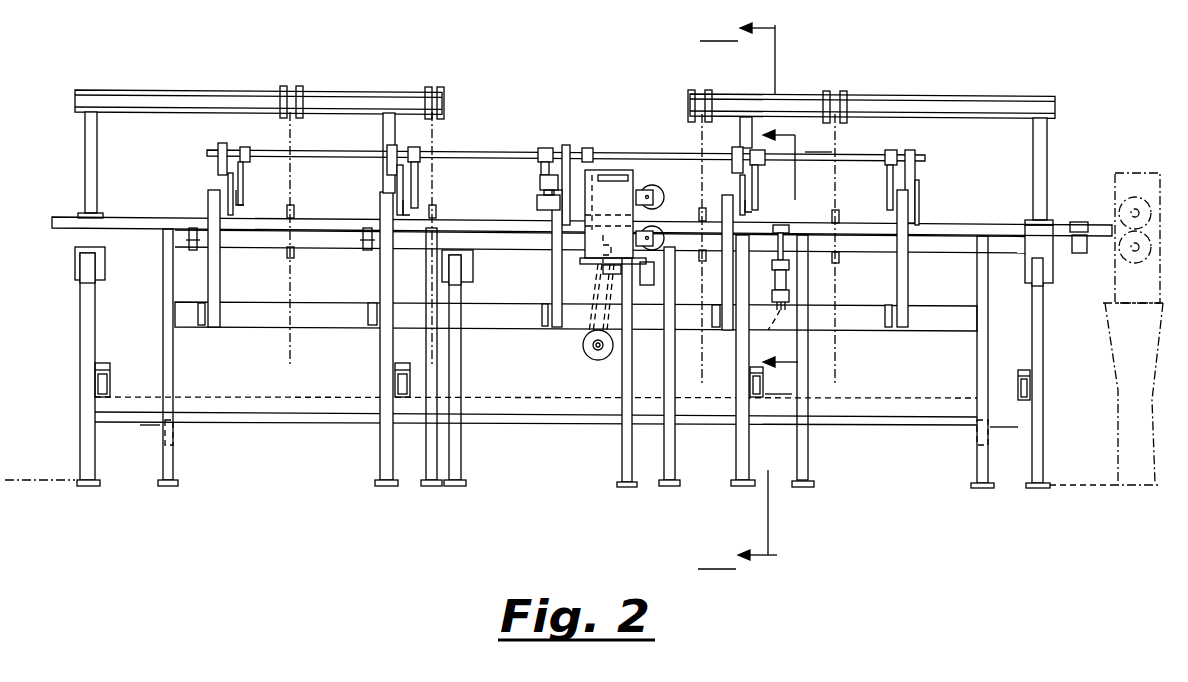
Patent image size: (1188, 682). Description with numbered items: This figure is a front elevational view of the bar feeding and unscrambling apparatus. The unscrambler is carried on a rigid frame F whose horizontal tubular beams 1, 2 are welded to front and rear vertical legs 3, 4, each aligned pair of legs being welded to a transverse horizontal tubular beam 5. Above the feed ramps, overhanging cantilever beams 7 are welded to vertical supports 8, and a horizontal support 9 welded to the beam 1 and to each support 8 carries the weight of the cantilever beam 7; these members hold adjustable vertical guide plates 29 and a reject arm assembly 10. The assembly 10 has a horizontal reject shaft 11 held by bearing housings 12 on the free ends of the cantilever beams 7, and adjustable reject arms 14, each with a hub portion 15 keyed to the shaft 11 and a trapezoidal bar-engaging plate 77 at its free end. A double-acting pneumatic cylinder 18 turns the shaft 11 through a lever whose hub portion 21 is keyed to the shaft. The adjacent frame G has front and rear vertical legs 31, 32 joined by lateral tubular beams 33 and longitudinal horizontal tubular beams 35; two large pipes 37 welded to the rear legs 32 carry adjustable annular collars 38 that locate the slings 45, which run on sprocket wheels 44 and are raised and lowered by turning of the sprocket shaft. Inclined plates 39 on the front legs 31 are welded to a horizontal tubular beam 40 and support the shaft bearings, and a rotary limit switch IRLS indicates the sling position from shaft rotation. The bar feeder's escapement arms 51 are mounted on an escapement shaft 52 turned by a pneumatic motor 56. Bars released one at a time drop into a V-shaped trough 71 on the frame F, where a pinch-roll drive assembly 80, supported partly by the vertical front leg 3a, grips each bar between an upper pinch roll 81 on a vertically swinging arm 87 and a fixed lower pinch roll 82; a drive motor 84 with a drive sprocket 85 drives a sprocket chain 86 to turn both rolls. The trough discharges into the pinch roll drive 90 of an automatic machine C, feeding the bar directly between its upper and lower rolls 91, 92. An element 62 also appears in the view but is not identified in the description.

The horizontal tubular beam 1 is at (330, 310).
The horizontal tubular beam 2 is at (335, 405).
The front vertical leg 3 is at (163, 348).
The vertical front leg 3a is at (622, 448).
The rear vertical leg 4 is at (797, 260).
The transverse horizontal tubular beam 5 is at (178, 448).
The cantilever beam 7 is at (208, 200).
The vertical support 8 is at (552, 268).
The horizontal support 9 is at (202, 326).
The reject arm assembly 10 is at (920, 148).
The horizontal reject shaft 11 is at (485, 152).
The bearing housing 12 is at (220, 143).
The adjustable reject arm 14 is at (418, 180).
The hub portion 15 is at (245, 147).
The double-acting pneumatic cylinder 18 is at (540, 183).
The hub portion 21 is at (543, 148).
The adjustable vertical guide plate 29 is at (233, 185).
The front vertical leg 31 is at (80, 447).
The rear vertical leg 32 is at (85, 135).
The lateral tubular beam 33 is at (110, 385).
The longitudinal horizontal tubular beam 35 is at (142, 425).
The large pipe 37 is at (190, 90).
The adjustable annular collar 38 is at (283, 86).
The flat rectangular metal plate 39 is at (75, 260).
The horizontal tubular beam 40 is at (322, 250).
The sprocket wheel 44 is at (287, 254).
The sling 45 is at (293, 192).
The escapement arm 51 is at (192, 250).
The horizontal escapement shaft 52 is at (330, 230).
The pneumatic motor 56 is at (789, 280).
The line 62 is at (767, 331).
The horizontal trough 71 is at (65, 217).
The trapezoidal plate 77 is at (244, 204).
The pinch-roll drive assembly 80 is at (613, 170).
The upper pinch roll 81 is at (656, 188).
The lower pinch roll 82 is at (658, 228).
The drive motor 84 is at (605, 358).
The drive sprocket 85 is at (590, 355).
The sprocket chain 86 is at (592, 300).
The vertically swinging arm 87 is at (645, 190).
The pinch roll drive 90 is at (1146, 168).
The upper roll 91 is at (1125, 195).
The lower roll 92 is at (1125, 262).
The frame G is at (80, 310).
The rigid frame F is at (163, 288).
The automatic machine C is at (1118, 418).
The rotary limit switch IRLS is at (1078, 222).